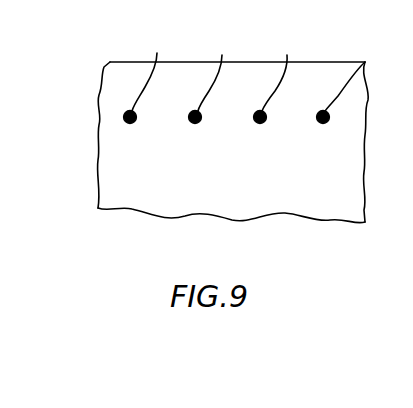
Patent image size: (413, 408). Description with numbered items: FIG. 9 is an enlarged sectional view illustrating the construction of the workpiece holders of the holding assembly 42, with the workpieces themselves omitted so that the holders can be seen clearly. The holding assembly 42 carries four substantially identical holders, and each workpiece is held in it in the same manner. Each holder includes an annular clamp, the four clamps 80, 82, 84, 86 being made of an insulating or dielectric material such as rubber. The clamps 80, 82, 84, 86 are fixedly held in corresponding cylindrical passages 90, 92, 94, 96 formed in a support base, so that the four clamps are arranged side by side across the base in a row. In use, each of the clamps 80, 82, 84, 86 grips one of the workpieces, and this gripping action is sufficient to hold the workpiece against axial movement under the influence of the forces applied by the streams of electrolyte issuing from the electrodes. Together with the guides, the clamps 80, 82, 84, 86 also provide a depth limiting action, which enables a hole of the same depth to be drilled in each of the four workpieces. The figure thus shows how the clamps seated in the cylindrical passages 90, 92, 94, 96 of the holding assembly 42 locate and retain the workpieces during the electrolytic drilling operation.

The holding assembly 42 is at (365, 152).
The clamp 80 is at (136, 121).
The clamp 82 is at (195, 123).
The clamp 84 is at (258, 123).
The clamp 86 is at (320, 123).
The cylindrical passage 90 is at (157, 53).
The cylindrical passage 92 is at (222, 55).
The cylindrical passage 94 is at (287, 55).
The cylindrical passage 96 is at (365, 62).